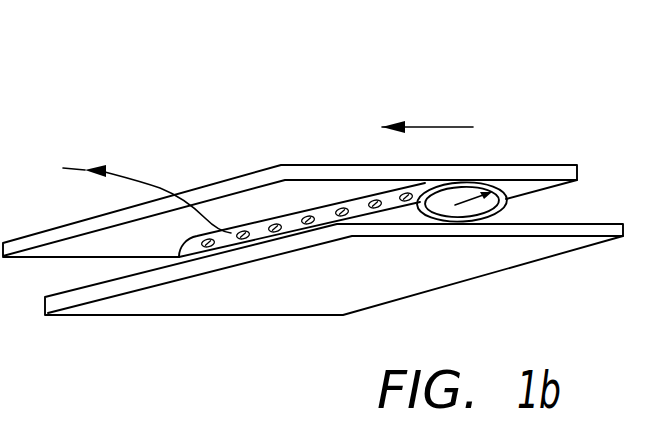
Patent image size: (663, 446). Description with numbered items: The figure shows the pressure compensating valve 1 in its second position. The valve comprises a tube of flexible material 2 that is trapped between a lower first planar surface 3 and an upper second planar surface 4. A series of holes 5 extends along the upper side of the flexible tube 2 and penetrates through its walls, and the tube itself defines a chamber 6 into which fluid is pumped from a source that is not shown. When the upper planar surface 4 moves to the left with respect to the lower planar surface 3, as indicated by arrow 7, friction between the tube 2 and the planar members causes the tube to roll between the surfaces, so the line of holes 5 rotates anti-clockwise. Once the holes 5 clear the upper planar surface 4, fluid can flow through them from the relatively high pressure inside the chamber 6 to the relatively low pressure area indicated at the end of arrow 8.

The pressure compensating valve 1 is at (316, 188).
The tube of flexible material 2 is at (412, 212).
The first planar surface 3 is at (387, 280).
The second planar surface 4 is at (228, 180).
The series of holes 5 is at (361, 199).
The chamber 6 is at (530, 193).
The arrow 7 is at (418, 128).
The arrow 8 is at (135, 190).